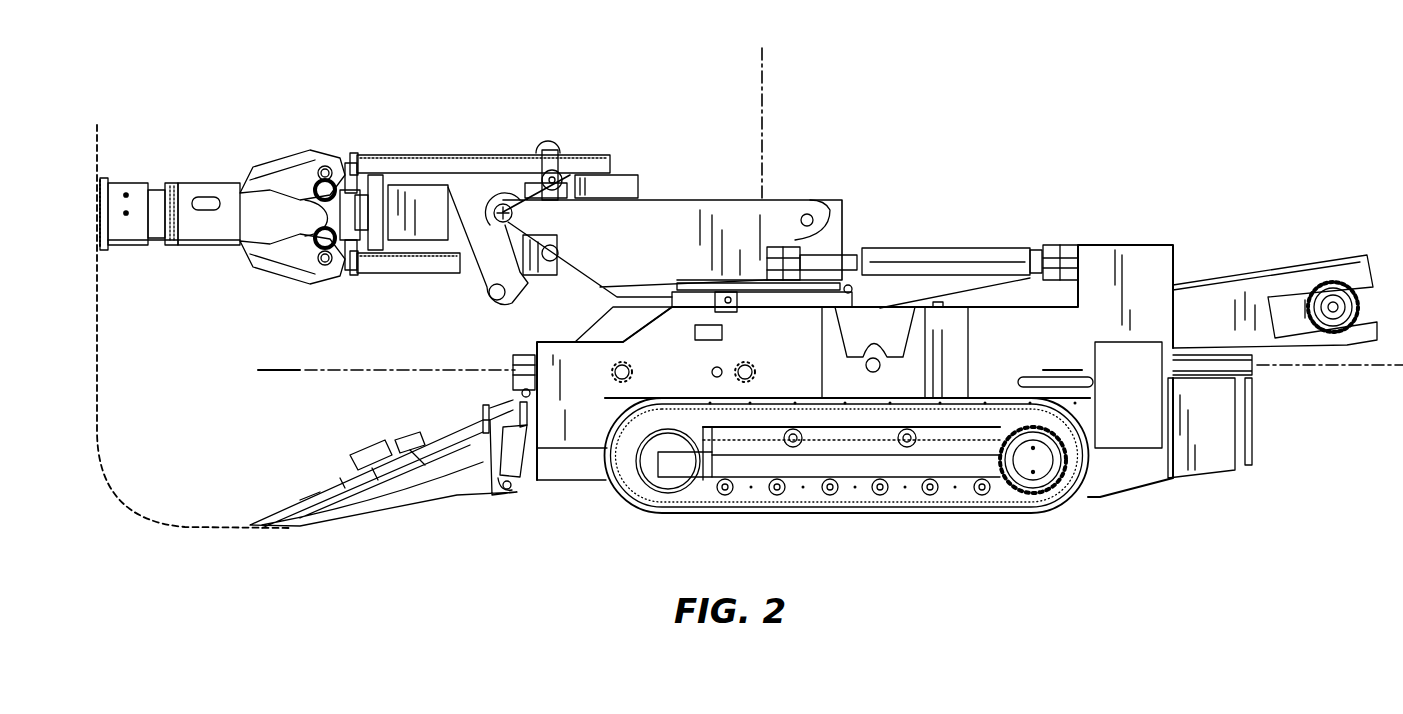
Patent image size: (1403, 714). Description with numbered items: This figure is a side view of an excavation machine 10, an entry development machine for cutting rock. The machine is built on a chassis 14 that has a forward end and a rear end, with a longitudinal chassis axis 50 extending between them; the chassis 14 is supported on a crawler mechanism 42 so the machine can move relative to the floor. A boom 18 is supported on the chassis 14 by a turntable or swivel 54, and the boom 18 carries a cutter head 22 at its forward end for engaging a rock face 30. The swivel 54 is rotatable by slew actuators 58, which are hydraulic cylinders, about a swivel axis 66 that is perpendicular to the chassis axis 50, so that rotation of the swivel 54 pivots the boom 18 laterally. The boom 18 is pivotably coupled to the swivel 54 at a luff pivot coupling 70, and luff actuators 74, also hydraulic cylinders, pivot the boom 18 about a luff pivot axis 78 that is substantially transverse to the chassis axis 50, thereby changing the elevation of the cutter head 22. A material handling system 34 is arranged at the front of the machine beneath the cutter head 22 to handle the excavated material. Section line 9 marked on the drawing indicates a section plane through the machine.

The excavation machine 10 is at (907, 58).
The chassis 14 is at (994, 212).
The boom 18 is at (330, 115).
The cutter head 22 is at (140, 148).
The rock face 30 is at (106, 447).
The material handling system 34 is at (328, 548).
The crawler mechanism 42 is at (968, 533).
The longitudinal chassis axis 50 is at (1311, 367).
The swivel 54 is at (680, 198).
The slew actuators 58 is at (933, 258).
The swivel axis 66 is at (763, 133).
The luff pivot coupling 70 is at (500, 205).
The luff actuators 74 is at (545, 290).
The luff pivot axis 78 is at (570, 170).
The section line 9- 9 is at (278, 355).